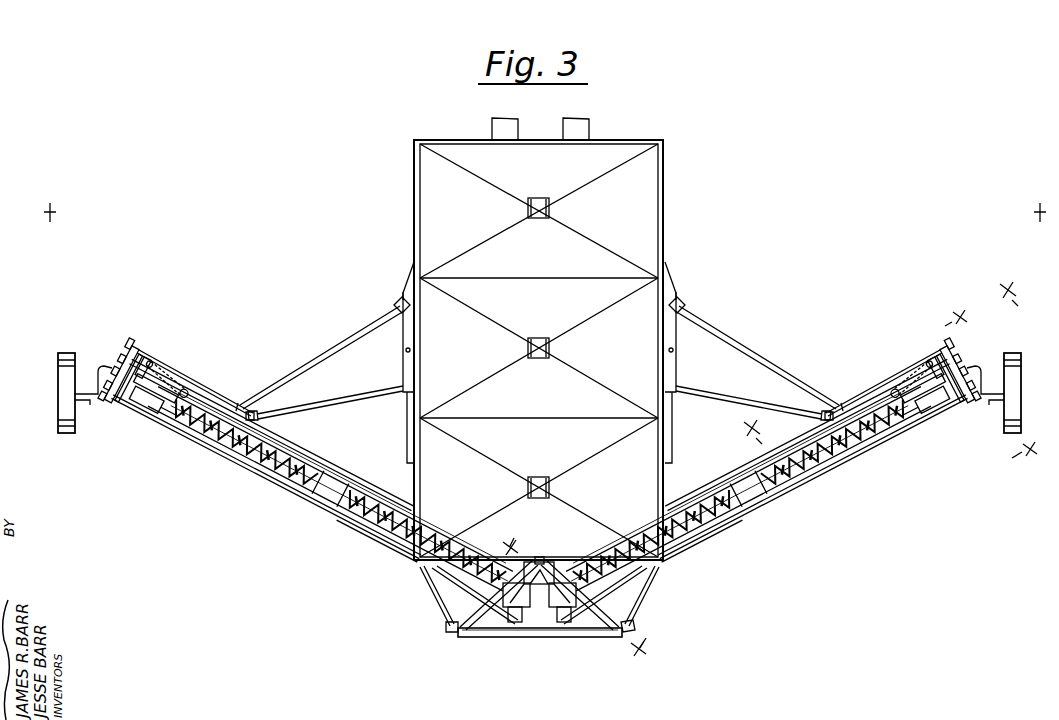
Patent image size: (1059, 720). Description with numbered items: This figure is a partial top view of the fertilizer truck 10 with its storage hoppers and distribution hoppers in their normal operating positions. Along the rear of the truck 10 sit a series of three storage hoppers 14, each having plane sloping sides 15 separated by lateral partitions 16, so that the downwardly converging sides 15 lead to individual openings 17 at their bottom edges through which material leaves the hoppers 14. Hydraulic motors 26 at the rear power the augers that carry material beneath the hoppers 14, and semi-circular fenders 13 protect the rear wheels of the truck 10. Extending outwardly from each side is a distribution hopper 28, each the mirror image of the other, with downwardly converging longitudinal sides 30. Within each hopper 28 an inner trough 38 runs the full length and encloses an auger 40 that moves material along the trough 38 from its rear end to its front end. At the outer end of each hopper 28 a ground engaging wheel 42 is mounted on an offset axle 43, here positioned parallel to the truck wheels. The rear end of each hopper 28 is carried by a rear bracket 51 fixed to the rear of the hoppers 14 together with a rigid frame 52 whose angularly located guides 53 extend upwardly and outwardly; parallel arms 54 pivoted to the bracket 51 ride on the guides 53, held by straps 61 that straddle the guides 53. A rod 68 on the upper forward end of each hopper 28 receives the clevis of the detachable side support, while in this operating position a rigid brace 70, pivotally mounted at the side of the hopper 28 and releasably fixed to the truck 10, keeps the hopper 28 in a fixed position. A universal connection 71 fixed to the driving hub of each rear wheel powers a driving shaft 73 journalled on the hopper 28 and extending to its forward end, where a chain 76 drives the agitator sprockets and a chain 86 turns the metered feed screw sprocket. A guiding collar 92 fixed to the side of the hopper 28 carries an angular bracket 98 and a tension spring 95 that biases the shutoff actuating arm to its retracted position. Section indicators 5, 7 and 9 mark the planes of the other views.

The section line 5- 5 is at (545, 225).
The section line 7- 7 is at (886, 370).
The section line 9- 9 is at (580, 587).
The truck 10 is at (982, 389).
The fenders 13 is at (407, 440).
The hoppers 14 is at (563, 339).
The sloping sides 15 is at (451, 217).
The lateral partitions 16 is at (529, 172).
The openings 17 is at (528, 208).
The hydraulic motors 26 is at (557, 617).
The distribution hoppers 28 is at (300, 513).
The longitudinal sides 30 is at (302, 461).
The inner trough 38 is at (172, 405).
The auger 40 is at (260, 456).
The ground engaging wheel 42 is at (64, 378).
The offset axle 43 is at (88, 400).
The rear bracket 51 is at (540, 565).
The rigid frame 52 is at (516, 638).
The guides 53 is at (446, 630).
The parallel arms 54 is at (502, 566).
The straps 61 is at (478, 566).
The rod 68 is at (135, 388).
The rigid brace 70 is at (405, 309).
The universal connection 71 is at (362, 398).
The driving shaft 73 is at (214, 399).
The chain 76 is at (109, 400).
The chain 86 is at (118, 348).
The guiding collar 92 is at (141, 358).
The tension spring 95 is at (170, 371).
The angular bracket 98 is at (172, 380).